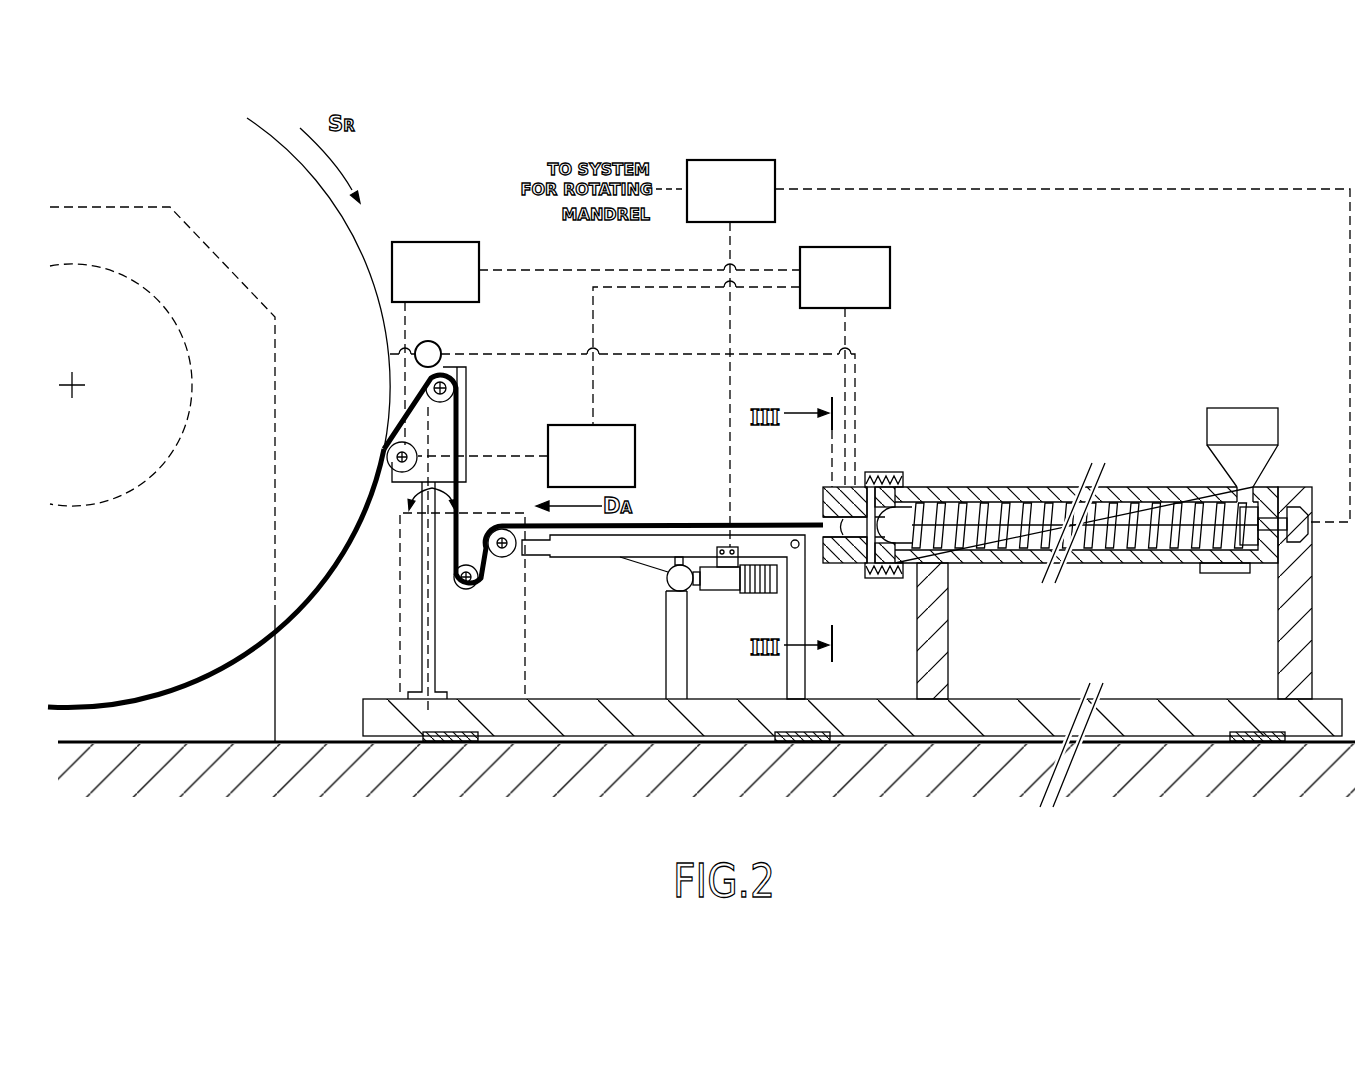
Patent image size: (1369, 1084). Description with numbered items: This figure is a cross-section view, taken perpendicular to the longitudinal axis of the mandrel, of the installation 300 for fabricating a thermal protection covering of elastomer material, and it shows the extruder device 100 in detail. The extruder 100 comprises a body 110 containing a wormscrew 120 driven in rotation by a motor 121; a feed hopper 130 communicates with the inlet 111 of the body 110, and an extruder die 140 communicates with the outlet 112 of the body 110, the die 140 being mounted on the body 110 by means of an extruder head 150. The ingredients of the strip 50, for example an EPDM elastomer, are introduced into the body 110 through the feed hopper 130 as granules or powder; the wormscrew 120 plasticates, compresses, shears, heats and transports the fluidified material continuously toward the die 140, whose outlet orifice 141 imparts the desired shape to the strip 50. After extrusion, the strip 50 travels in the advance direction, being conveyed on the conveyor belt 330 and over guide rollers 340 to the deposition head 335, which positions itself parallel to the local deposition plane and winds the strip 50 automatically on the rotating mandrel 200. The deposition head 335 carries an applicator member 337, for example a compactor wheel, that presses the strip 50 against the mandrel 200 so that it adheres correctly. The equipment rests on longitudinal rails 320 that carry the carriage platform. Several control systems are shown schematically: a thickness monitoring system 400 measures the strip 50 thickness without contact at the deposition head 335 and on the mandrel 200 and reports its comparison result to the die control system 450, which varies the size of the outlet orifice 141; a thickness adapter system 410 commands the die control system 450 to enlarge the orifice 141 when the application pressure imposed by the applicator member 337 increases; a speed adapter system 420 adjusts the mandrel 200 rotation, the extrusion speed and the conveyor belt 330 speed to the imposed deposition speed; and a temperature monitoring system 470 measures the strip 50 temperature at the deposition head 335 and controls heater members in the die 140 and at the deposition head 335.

The strip 50 is at (671, 521).
The extruder device 100 is at (1046, 532).
The body 110 is at (1162, 486).
The inlet 111 is at (1255, 488).
The outlet 112 is at (912, 495).
The wormscrew 120 is at (1158, 545).
The motor 121 is at (1306, 528).
The feed hopper 130 is at (1270, 418).
The extruder die 140 is at (810, 479).
The outlet orifice 141 is at (843, 570).
The extruder head 150 is at (884, 470).
The mandrel 200 is at (365, 232).
The installation 300 is at (1063, 172).
The longitudinal rails 320 is at (790, 742).
The conveyor belt 330 is at (589, 548).
The deposition head 335 is at (480, 403).
The applicator member 337 is at (395, 472).
The guide rollers 340 is at (503, 558).
The thickness monitoring system 400 is at (454, 285).
The thickness adapter system 410 is at (610, 469).
The speed adapter system 420 is at (750, 204).
The die control system 450 is at (864, 291).
The temperature monitoring system 470 is at (441, 349).